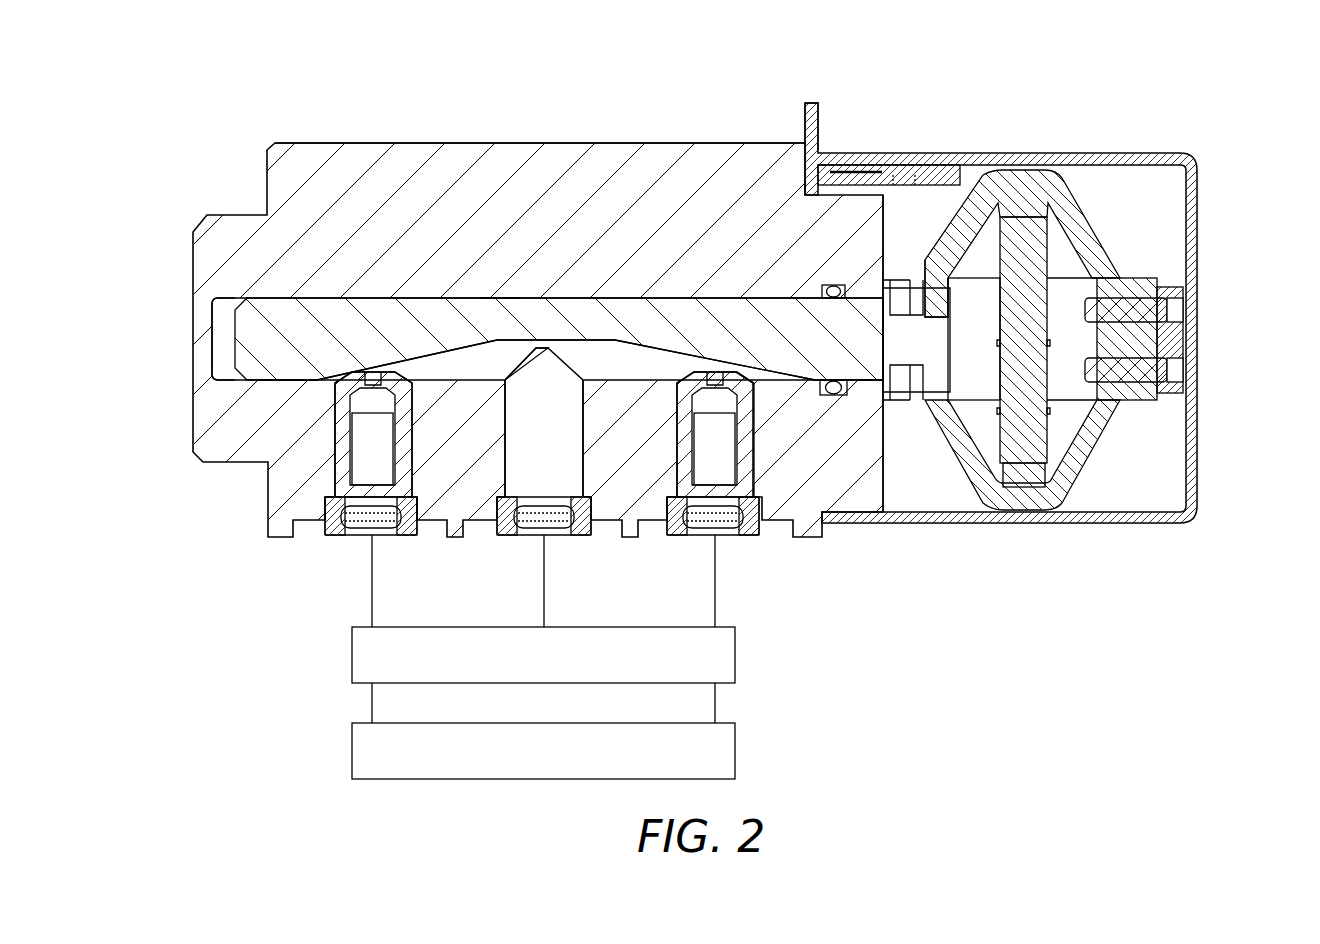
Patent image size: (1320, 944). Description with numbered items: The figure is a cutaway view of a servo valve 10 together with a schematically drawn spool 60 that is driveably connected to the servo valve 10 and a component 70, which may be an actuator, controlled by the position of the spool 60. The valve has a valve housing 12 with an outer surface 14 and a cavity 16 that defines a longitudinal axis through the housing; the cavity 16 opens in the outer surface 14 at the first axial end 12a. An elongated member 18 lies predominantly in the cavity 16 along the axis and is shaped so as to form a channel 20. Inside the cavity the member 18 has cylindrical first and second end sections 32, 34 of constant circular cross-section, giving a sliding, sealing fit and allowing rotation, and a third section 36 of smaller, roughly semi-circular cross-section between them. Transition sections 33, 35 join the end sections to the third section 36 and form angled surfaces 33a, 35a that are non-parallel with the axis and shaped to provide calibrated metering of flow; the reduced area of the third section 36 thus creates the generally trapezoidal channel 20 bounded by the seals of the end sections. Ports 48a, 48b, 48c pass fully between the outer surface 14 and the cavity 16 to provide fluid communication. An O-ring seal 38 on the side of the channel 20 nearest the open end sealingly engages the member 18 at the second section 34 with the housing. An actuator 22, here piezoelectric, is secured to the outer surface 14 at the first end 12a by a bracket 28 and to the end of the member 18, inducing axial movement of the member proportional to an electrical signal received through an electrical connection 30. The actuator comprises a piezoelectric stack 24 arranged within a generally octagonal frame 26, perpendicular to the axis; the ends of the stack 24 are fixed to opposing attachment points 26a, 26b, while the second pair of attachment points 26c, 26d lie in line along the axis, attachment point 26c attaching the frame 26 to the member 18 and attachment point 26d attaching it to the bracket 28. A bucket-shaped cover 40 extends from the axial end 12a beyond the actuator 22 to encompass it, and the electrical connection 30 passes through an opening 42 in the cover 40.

The servo valve 10 is at (1163, 100).
The valve housing 12 is at (493, 165).
The first axial end 12a is at (885, 490).
The outer surface 14 is at (297, 143).
The cavity 16 is at (622, 338).
The elongated member 18 is at (868, 360).
The channel 20 is at (495, 338).
The actuator 22 is at (1033, 340).
The piezoelectric stack 24 is at (1037, 240).
The frame 26 is at (1074, 340).
The first attachment point 26a is at (1028, 180).
The second attachment point 26b is at (1025, 488).
The third attachment point 26c is at (927, 338).
The fourth attachment point 26d is at (1115, 338).
The bracket 28 is at (968, 388).
The electrical connection 30 is at (945, 182).
The first end section 32 is at (245, 339).
The first transition section 33 is at (330, 340).
The first angled surface 33a is at (447, 355).
The second end section 34 is at (827, 343).
The second transition section 35 is at (763, 330).
The second angled surface 35a is at (650, 352).
The third section 36 is at (557, 320).
The O-ring seal 38 is at (833, 285).
The cover 40 is at (1197, 186).
The opening 42 is at (818, 148).
The port 48a is at (368, 470).
The port 48b is at (538, 470).
The port 48c is at (710, 470).
The spool 60 is at (737, 637).
The component 70 is at (737, 733).